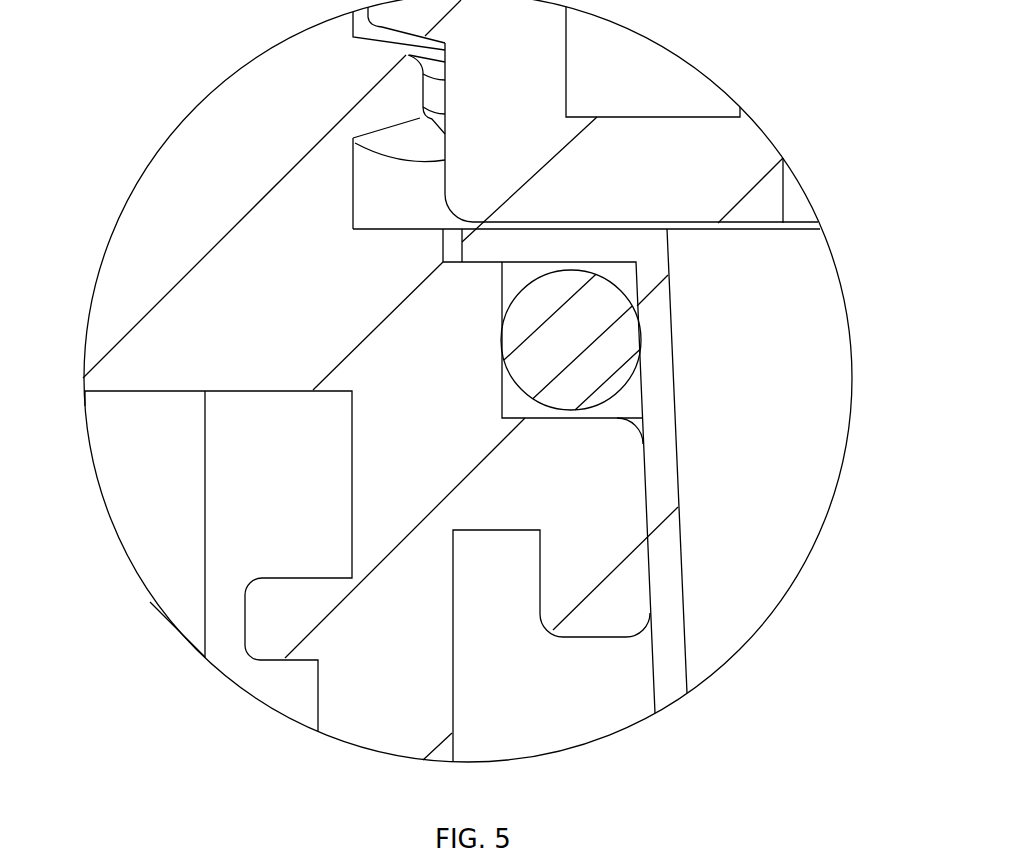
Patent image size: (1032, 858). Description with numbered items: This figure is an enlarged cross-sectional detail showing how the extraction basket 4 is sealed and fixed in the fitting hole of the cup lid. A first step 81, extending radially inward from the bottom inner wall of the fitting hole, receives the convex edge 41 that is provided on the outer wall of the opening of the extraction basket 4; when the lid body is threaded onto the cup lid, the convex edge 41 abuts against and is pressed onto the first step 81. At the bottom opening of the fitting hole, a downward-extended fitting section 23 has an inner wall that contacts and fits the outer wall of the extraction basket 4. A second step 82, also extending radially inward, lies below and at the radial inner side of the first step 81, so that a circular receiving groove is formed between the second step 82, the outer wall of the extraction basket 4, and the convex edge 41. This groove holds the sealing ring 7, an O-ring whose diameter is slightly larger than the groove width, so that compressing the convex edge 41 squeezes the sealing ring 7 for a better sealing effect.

The extraction basket 4 is at (660, 483).
The sealing ring 7 is at (593, 330).
The fitting section 23 is at (622, 610).
The convex edge 41 is at (543, 247).
The first step 81 is at (472, 265).
The second step 82 is at (575, 417).